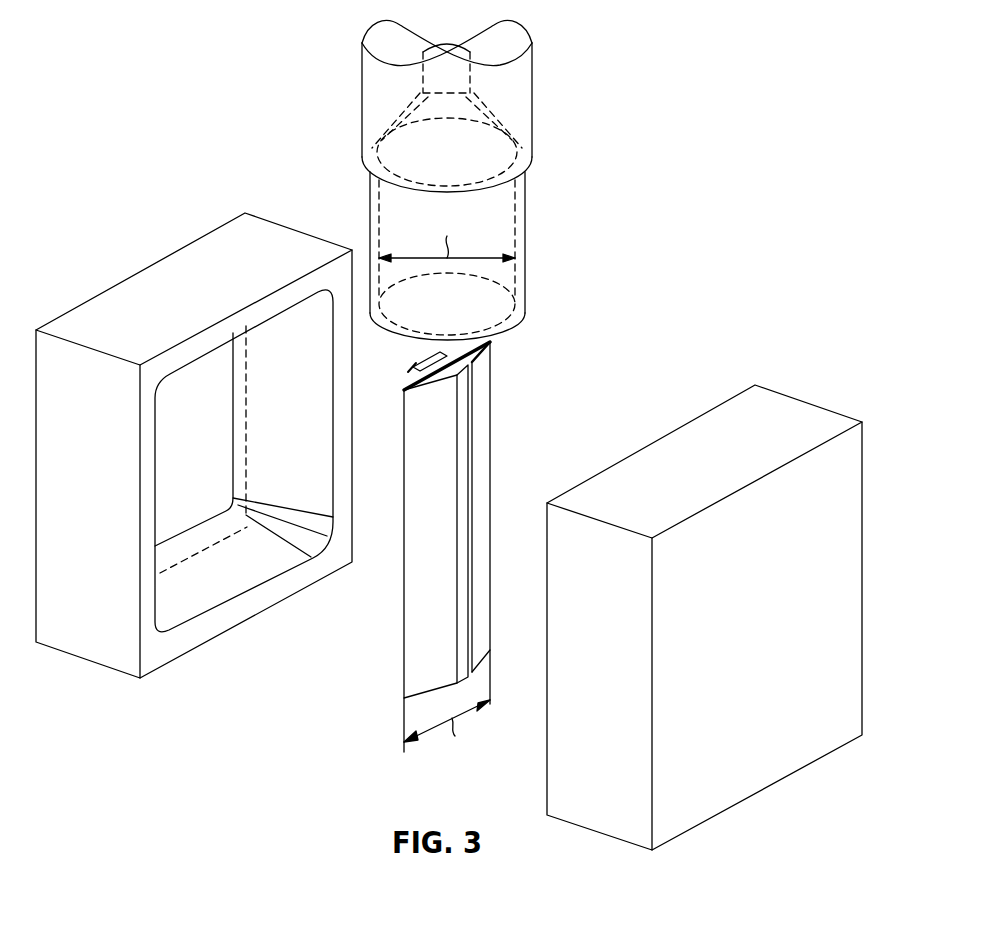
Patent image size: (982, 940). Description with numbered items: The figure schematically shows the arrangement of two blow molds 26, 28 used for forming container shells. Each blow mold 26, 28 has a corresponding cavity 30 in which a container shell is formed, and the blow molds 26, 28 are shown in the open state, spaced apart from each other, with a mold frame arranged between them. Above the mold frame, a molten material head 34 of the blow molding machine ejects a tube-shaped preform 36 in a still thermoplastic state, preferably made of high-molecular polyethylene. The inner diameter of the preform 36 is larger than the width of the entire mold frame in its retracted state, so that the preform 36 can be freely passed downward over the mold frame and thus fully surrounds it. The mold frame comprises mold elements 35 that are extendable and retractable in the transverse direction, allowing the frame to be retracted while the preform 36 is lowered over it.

The blow mold 26 is at (88, 642).
The blow mold 28 is at (743, 758).
The cavity 30 is at (207, 433).
The molten material head 34 is at (527, 110).
The mold element 35 is at (413, 555).
The tube-shaped preform 36 is at (525, 245).